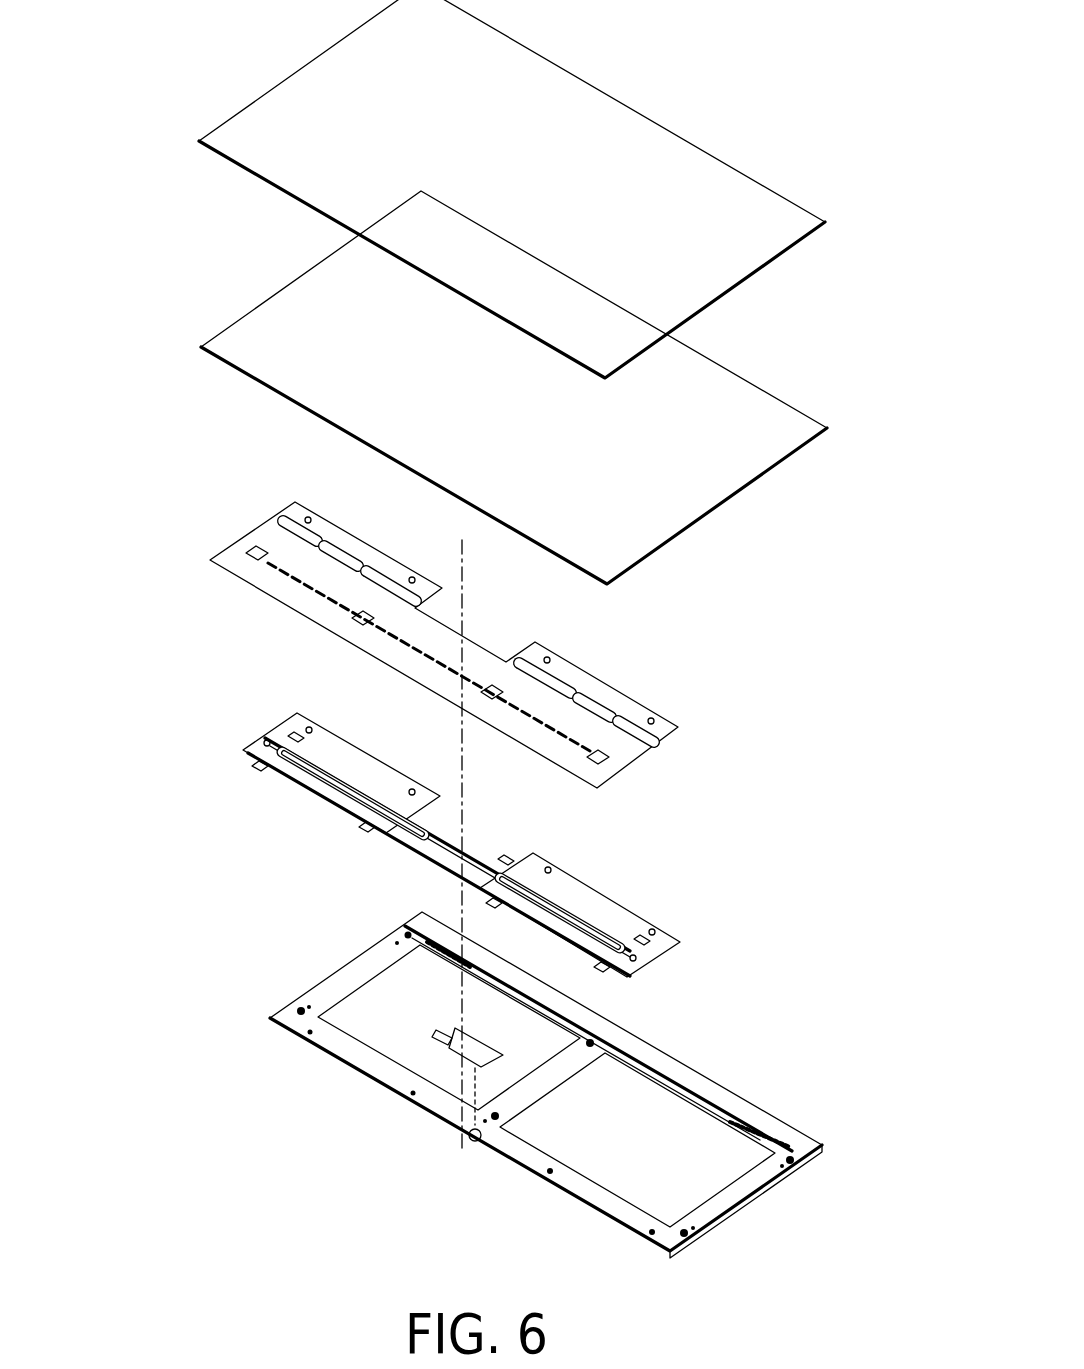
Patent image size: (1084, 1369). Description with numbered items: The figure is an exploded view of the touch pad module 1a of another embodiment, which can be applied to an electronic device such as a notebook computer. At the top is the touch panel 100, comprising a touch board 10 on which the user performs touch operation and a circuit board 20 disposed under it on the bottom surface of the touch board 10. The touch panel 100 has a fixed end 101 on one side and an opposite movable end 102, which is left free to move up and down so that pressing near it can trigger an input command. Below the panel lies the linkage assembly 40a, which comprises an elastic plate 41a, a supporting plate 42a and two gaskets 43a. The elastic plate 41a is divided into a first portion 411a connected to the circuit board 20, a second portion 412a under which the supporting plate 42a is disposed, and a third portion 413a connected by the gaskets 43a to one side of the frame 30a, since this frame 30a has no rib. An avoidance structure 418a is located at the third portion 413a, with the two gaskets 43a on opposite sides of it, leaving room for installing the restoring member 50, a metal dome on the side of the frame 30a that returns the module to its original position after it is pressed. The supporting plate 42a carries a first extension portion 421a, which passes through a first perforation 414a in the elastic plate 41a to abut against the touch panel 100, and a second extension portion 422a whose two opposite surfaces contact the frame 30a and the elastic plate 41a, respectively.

The touch pad module 1a is at (134, 52).
The touch panel 100 is at (885, 172).
The touch board 10 is at (798, 222).
The fixed end 101 is at (664, 104).
The circuit board 20 is at (802, 433).
The movable end 102 is at (206, 233).
The linkage assembly 40a is at (221, 452).
The elastic plate 41a is at (258, 533).
The first portion 411a is at (607, 777).
The second portion 412a is at (647, 748).
The third portion 413a is at (678, 727).
The first perforation 414a is at (250, 548).
The avoidance structure 418a is at (516, 628).
The supporting plate 42a is at (258, 748).
The first extension portion 421a is at (253, 763).
The second extension portion 422a is at (503, 856).
The gasket 43a is at (297, 723).
The frame 30a is at (337, 985).
The restoring member 50 is at (450, 1026).